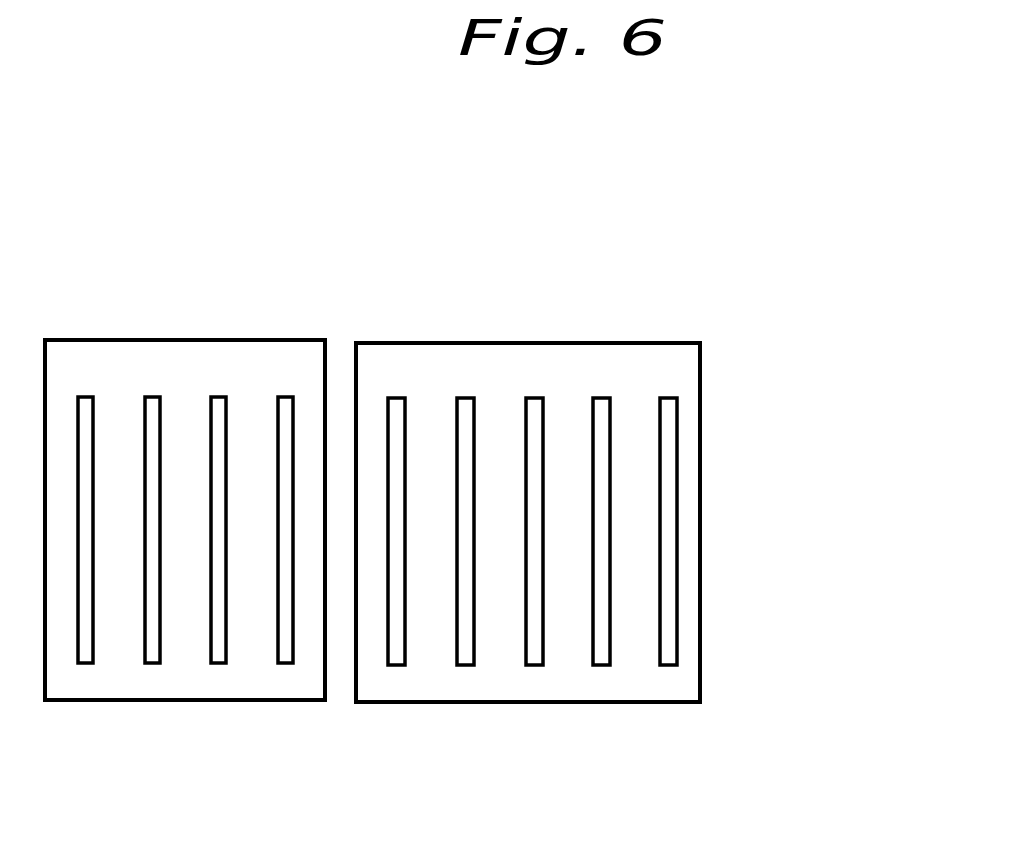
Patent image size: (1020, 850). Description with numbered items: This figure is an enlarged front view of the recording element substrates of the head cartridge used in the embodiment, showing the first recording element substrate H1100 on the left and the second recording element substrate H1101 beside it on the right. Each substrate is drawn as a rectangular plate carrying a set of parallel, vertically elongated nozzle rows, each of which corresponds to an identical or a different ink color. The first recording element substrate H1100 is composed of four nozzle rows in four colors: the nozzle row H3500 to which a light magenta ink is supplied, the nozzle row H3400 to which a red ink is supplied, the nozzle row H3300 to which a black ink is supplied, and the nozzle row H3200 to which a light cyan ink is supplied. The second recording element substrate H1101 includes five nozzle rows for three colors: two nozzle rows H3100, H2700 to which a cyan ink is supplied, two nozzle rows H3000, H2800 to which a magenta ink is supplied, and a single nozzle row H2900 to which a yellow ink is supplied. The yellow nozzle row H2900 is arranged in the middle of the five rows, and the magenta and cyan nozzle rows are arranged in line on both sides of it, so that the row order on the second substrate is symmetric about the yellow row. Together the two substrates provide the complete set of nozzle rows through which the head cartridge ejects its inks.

The first recording element substrate H1100 is at (182, 685).
The second recording element substrate H1101 is at (578, 373).
The nozzle row H3500 is at (85, 397).
The nozzle row H3400 is at (152, 397).
The nozzle row H3300 is at (218, 397).
The nozzle row H3200 is at (285, 397).
The nozzle row H3100 is at (397, 665).
The nozzle row H3000 is at (466, 665).
The nozzle row H2900 is at (535, 665).
The nozzle row H2800 is at (601, 665).
The nozzle row H2700 is at (668, 665).